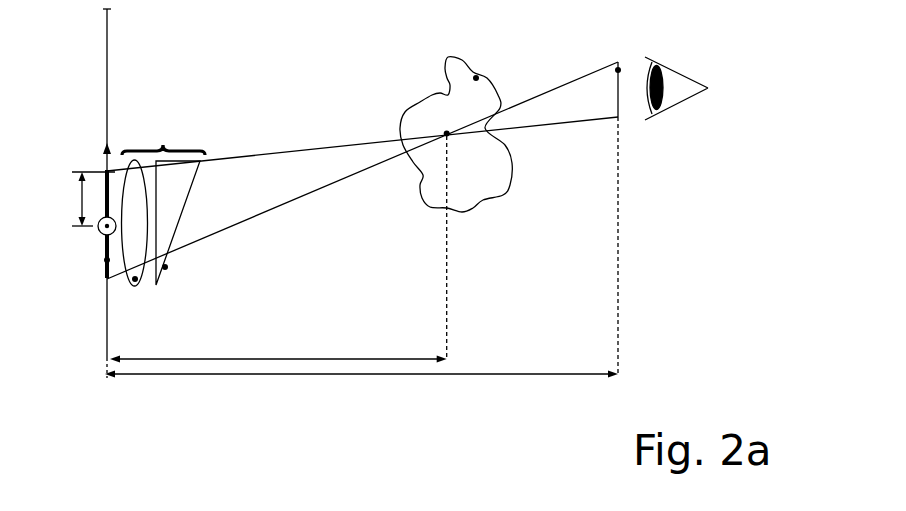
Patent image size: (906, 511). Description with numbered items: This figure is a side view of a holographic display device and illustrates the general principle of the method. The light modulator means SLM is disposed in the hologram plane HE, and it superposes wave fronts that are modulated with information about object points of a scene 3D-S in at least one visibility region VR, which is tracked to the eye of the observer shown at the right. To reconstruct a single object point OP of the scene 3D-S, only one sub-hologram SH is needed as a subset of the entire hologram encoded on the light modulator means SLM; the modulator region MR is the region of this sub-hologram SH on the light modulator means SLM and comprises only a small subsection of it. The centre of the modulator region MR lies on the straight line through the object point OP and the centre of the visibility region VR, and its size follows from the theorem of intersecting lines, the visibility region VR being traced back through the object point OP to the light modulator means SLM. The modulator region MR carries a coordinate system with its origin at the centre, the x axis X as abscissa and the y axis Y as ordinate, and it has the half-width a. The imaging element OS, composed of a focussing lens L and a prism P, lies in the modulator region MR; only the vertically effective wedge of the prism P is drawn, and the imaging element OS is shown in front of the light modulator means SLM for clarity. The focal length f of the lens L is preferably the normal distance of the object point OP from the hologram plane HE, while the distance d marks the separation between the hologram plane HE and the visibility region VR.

The hologram plane HE is at (172, 193).
The light modulator means SLM is at (97, 175).
The x axis X is at (113, 140).
The y axis Y is at (101, 237).
The half-width a is at (88, 199).
The sub-hologram SH is at (76, 285).
The modulator region MR is at (105, 263).
The imaging element OS is at (163, 136).
The focussing lens L is at (137, 282).
The prism P is at (167, 270).
The scene 3D-S is at (478, 76).
The object point OP is at (449, 136).
The visibility region VR is at (620, 68).
The focal length f is at (278, 352).
The distance d is at (361, 367).